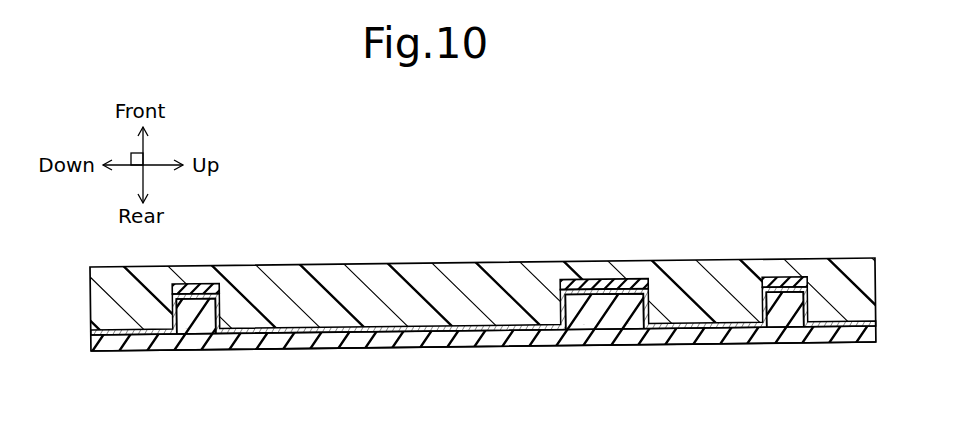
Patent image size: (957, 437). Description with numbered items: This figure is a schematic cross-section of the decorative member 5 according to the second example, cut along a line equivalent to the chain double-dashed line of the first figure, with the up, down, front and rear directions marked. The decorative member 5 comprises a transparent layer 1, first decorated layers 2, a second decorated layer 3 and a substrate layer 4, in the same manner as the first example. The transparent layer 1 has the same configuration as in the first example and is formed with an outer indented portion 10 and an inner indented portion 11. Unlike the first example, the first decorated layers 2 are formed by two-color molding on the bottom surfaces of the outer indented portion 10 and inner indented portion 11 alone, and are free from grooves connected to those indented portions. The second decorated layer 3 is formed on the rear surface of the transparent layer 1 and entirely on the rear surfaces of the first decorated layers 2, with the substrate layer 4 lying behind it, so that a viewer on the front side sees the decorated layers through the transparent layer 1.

The transparent layer 1 is at (344, 270).
The first decorated layers 2 is at (190, 283).
The second decorated layer 3 is at (475, 327).
The substrate layer 4 is at (603, 337).
The decorative member 5 is at (835, 248).
The outer indented portion 10 is at (193, 315).
The inner indented portion 11 is at (632, 310).